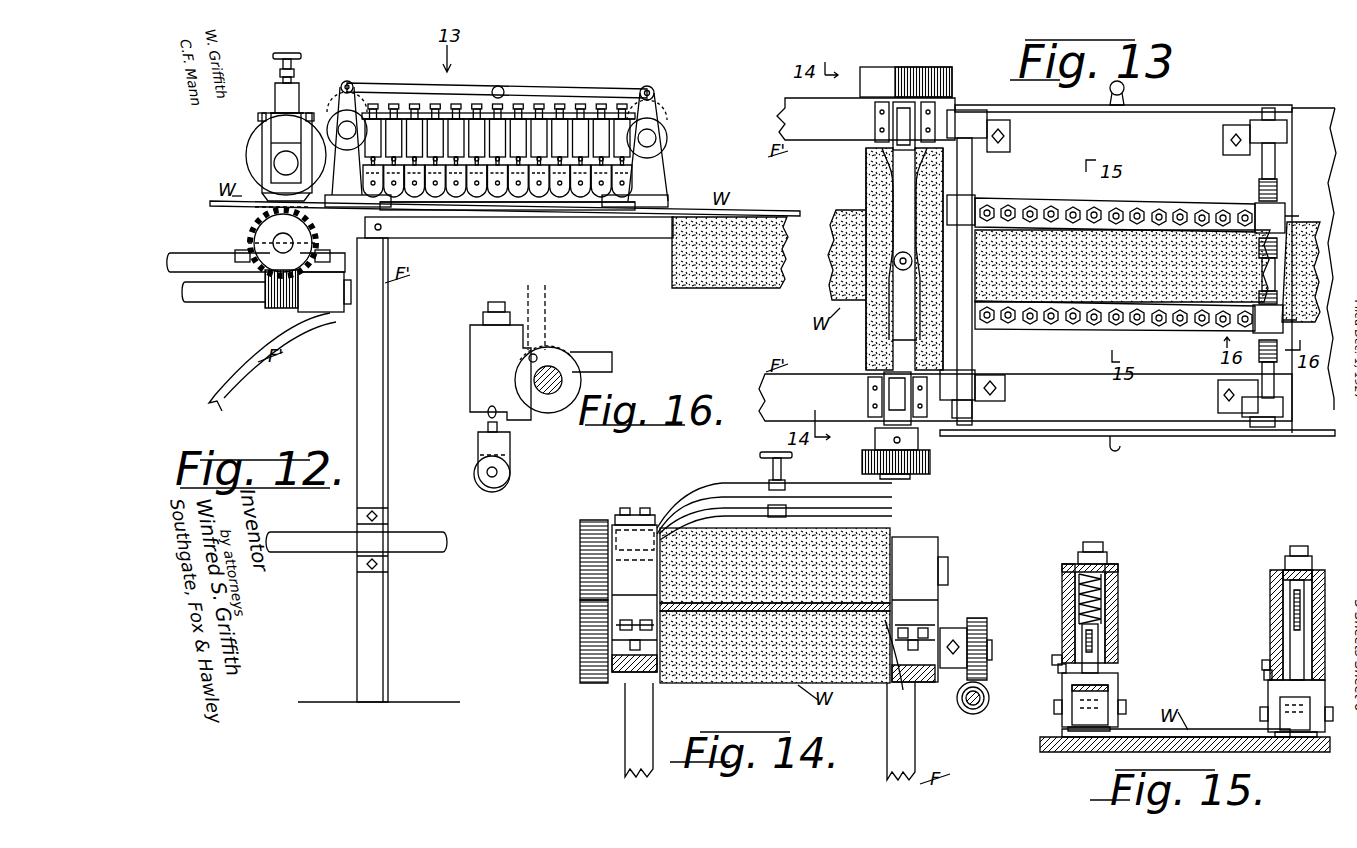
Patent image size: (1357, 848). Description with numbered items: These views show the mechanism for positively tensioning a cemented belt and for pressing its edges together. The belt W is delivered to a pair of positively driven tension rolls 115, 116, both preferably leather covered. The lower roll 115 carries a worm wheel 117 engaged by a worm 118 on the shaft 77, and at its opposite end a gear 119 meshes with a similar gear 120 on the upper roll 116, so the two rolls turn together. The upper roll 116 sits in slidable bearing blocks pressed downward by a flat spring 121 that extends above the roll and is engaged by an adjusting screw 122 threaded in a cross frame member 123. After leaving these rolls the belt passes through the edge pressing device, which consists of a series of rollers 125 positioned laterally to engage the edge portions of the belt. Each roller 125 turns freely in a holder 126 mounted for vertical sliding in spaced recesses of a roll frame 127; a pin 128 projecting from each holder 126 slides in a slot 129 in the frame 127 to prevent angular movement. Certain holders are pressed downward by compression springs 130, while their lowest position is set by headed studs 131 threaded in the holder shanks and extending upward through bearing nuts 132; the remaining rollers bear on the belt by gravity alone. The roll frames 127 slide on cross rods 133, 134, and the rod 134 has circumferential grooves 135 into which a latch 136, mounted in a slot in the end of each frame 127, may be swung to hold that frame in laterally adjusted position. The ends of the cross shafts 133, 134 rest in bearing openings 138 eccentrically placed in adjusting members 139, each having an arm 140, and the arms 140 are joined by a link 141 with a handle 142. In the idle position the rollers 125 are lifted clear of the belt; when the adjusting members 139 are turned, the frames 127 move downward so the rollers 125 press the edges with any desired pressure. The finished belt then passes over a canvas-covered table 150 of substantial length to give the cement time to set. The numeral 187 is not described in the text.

In FIG. 12, the shaft 77 is at (218, 300).
In FIG. 14, the shaft 77 is at (960, 697).
In FIG. 12, the positively driven tension roll 115 is at (248, 245).
In FIG. 14, the positively driven tension roll 115 is at (770, 682).
In FIG. 12, the upper roll 116 is at (265, 150).
In FIG. 13, the upper roll 116 is at (867, 194).
In FIG. 14, the upper roll 116 is at (858, 528).
In FIG. 12, the worm wheel 117 is at (314, 224).
In FIG. 13, the worm wheel 117 is at (930, 460).
In FIG. 14, the worm wheel 117 is at (977, 620).
In FIG. 12, the worm 118 is at (273, 308).
In FIG. 14, the worm 118 is at (971, 706).
In FIG. 14, the gear 119 is at (580, 619).
In FIG. 13, the gear 120 is at (920, 70).
In FIG. 14, the gear 120 is at (577, 535).
In FIG. 12, the flat spring 121 is at (270, 118).
In FIG. 13, the flat spring 121 is at (882, 120).
In FIG. 14, the flat spring 121 is at (760, 498).
In FIG. 12, the adjusting screw 122 is at (292, 52).
In FIG. 13, the adjusting screw 122 is at (892, 262).
In FIG. 14, the adjusting screw 122 is at (762, 468).
In FIG. 12, the cross frame member 123 is at (288, 100).
In FIG. 13, the cross frame member 123 is at (888, 175).
In FIG. 14, the cross frame member 123 is at (674, 499).
In FIG. 12, the rollers 125 is at (558, 196).
In FIG. 16, the rollers 125 is at (490, 482).
In FIG. 15, the rollers 125 is at (1096, 700).
In FIG. 12, the holder 126 is at (470, 197).
In FIG. 16, the holder 126 is at (478, 455).
In FIG. 15, the holder 126 is at (1110, 678).
In FIG. 12, the roll frame 127 is at (397, 123).
In FIG. 16, the roll frame 127 is at (472, 359).
In FIG. 13, the roll frame 127 is at (1048, 204).
In FIG. 15, the roll frame 127 is at (1117, 618).
In FIG. 16, the pin 128 is at (486, 424).
In FIG. 15, the pin 128 is at (1060, 670).
In FIG. 16, the slot 129 is at (486, 412).
In FIG. 15, the slot 129 is at (1058, 656).
In FIG. 15, the compression springs 130 is at (1113, 590).
In FIG. 12, the headed studs 131 is at (540, 108).
In FIG. 16, the headed studs 131 is at (485, 310).
In FIG. 13, the headed studs 131 is at (1158, 209).
In FIG. 15, the headed studs 131 is at (1095, 532).
In FIG. 12, the bearing nuts 132 is at (584, 110).
In FIG. 16, the bearing nuts 132 is at (482, 320).
In FIG. 13, the bearing nuts 132 is at (1174, 332).
In FIG. 15, the bearing nuts 132 is at (1106, 558).
In FIG. 13, the cross rod 133 is at (968, 172).
In FIG. 16, the cross rod 134 is at (535, 382).
In FIG. 13, the cross rod 134 is at (1255, 170).
In FIG. 16, the circumferential grooves 135 is at (543, 394).
In FIG. 13, the circumferential grooves 135 is at (1259, 194).
In FIG. 16, the latch 136 is at (588, 353).
In FIG. 13, the latch 136 is at (1285, 213).
In FIG. 12, the bearing openings 138 is at (666, 130).
In FIG. 12, the adjusting members 139 is at (348, 151).
In FIG. 12, the arm 140 is at (340, 104).
In FIG. 12, the link 141 is at (635, 98).
In FIG. 13, the link 141 is at (1220, 92).
In FIG. 12, the handle 142 is at (505, 80).
In FIG. 13, the handle 142 is at (1120, 100).
In FIG. 12, the table 150 is at (793, 207).
In FIG. 13, the table 150 is at (1293, 436).
In FIG. 15, the table 150 is at (1063, 752).
In FIG. 12, the cross bar 187 is at (415, 558).